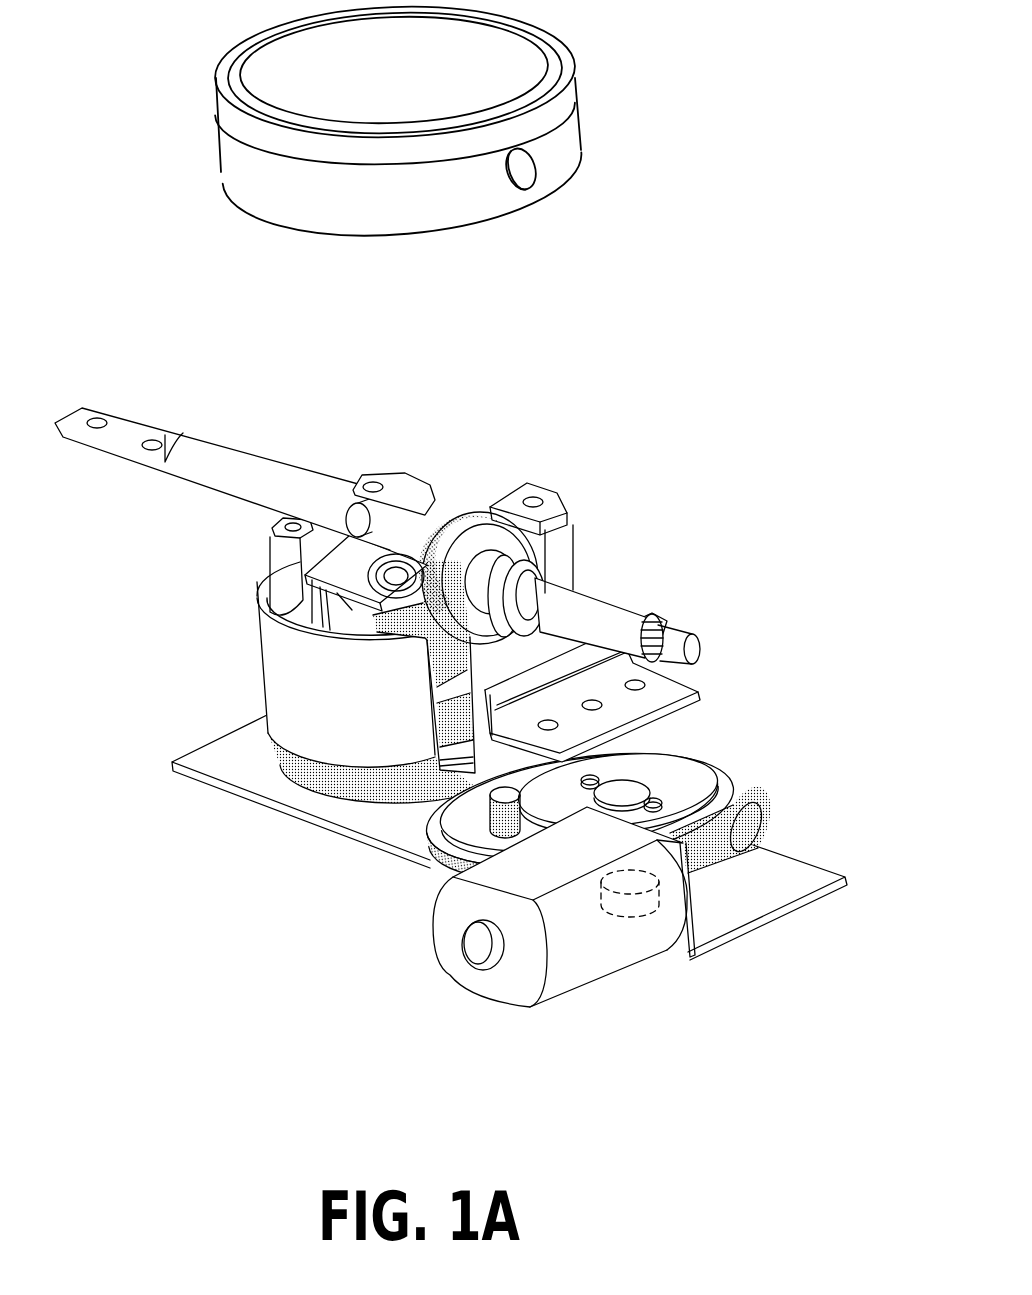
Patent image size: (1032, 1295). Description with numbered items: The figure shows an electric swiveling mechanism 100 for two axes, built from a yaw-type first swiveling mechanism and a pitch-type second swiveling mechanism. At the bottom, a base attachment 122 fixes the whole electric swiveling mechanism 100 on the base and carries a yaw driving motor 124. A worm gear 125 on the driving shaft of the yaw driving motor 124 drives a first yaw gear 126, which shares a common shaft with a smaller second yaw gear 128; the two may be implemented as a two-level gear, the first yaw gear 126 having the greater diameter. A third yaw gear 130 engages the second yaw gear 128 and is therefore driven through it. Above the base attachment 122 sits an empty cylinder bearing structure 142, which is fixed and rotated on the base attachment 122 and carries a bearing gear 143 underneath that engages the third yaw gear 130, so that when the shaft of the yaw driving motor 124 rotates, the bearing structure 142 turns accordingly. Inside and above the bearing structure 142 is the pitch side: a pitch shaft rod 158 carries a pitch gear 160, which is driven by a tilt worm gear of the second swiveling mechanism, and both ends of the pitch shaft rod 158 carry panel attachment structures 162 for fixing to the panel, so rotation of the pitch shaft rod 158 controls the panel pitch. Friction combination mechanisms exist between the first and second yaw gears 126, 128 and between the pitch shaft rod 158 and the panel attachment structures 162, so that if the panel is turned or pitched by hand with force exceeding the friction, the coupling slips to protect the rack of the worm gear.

The electric swiveling mechanism 100 is at (780, 193).
The base attachment 122 is at (213, 752).
The yaw driving motor 124 is at (607, 963).
The worm gear 125 is at (733, 833).
The first yaw gear 126 is at (645, 757).
The second yaw gear 128 is at (637, 918).
The third yaw gear 130 is at (470, 855).
The empty cylinder bearing structure 142 is at (278, 682).
The bearing gear 143 is at (313, 782).
The pitch shaft rod 158 is at (773, 483).
The pitch gear 160 is at (455, 515).
The panel attachment structures 162 is at (312, 498).